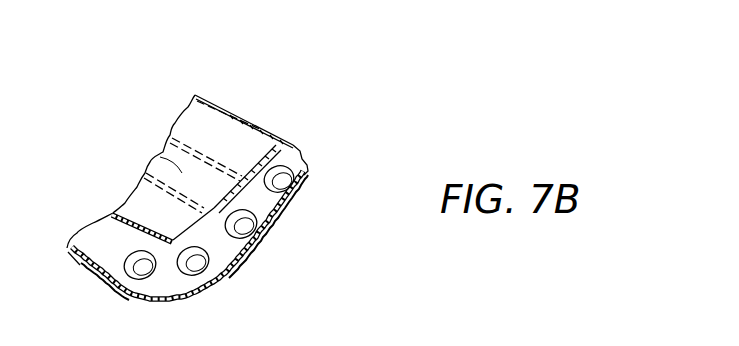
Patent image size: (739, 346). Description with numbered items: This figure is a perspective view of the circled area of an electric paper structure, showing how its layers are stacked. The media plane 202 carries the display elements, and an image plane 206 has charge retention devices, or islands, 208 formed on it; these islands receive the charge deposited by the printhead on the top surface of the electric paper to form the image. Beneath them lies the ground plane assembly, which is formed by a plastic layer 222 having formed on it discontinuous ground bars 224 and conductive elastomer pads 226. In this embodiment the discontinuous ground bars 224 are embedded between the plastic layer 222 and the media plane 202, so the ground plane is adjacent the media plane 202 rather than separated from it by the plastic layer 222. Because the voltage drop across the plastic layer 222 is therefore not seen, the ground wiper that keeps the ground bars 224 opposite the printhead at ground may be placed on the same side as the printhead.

The media plane 202 is at (303, 167).
The image plane 206 is at (230, 268).
The charge retention devices 208 is at (291, 189).
The plastic layer 222 is at (222, 127).
The discontinuous ground bars 224 is at (193, 131).
The conductive elastomer pads 226 is at (182, 173).